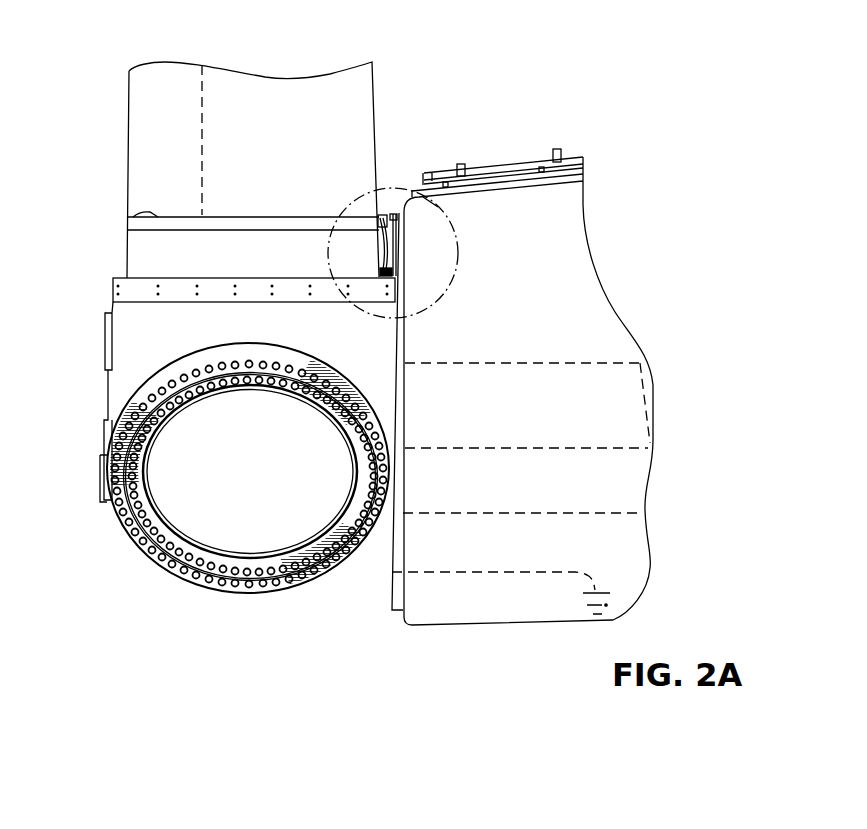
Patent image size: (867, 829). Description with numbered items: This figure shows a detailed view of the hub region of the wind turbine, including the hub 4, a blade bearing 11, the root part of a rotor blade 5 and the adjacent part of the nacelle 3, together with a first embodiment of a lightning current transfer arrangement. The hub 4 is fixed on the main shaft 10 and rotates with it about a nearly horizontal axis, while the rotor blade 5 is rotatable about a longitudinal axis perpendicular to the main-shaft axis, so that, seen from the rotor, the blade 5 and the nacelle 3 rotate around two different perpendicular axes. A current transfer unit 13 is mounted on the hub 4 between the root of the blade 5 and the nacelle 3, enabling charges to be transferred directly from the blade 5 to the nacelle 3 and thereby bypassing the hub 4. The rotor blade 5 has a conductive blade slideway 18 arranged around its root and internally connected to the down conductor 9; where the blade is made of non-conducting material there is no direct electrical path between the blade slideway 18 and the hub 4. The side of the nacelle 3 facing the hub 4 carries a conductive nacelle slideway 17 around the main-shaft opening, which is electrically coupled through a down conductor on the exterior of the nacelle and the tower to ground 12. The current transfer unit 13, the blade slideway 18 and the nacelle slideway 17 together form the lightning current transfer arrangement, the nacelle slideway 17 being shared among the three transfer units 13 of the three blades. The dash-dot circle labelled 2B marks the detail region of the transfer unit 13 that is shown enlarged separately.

The rotor blade 5 is at (178, 56).
The down conductor 9 is at (196, 182).
The blade slideway 18 is at (132, 217).
The current transfer unit 13 is at (394, 200).
The detail view 2B is at (438, 206).
The nacelle 3 is at (604, 261).
The main shaft 10 is at (598, 399).
The ground 12 is at (601, 565).
The hub 4 is at (220, 602).
The blade bearing 11 is at (152, 553).
The nacelle slideway 17 is at (375, 617).